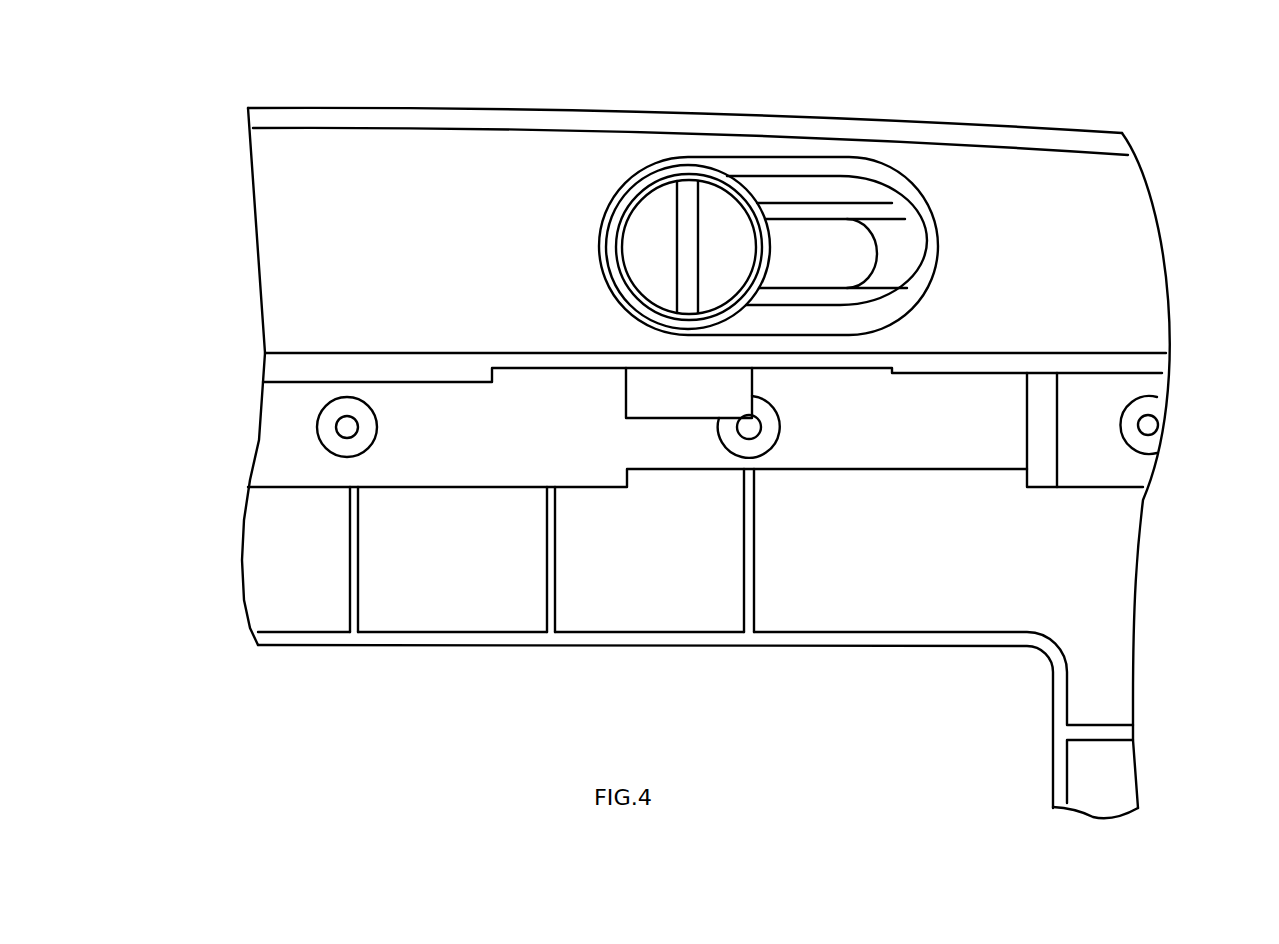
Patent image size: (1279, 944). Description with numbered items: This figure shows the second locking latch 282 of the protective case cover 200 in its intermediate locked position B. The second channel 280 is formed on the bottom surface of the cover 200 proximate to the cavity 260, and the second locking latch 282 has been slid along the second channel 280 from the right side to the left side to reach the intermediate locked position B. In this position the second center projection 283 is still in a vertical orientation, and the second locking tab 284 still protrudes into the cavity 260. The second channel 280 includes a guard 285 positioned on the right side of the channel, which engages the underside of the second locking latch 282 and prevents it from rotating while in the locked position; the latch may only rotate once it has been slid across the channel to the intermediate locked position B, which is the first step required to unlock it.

The cover 200 is at (190, 217).
The cavity 260 is at (1080, 431).
The second channel 280 is at (765, 175).
The second locking latch 282 is at (670, 188).
The second center projection 283 is at (688, 208).
The second locking tab 284 is at (683, 402).
The guard 285 is at (875, 253).
The intermediate locked position B is at (600, 165).